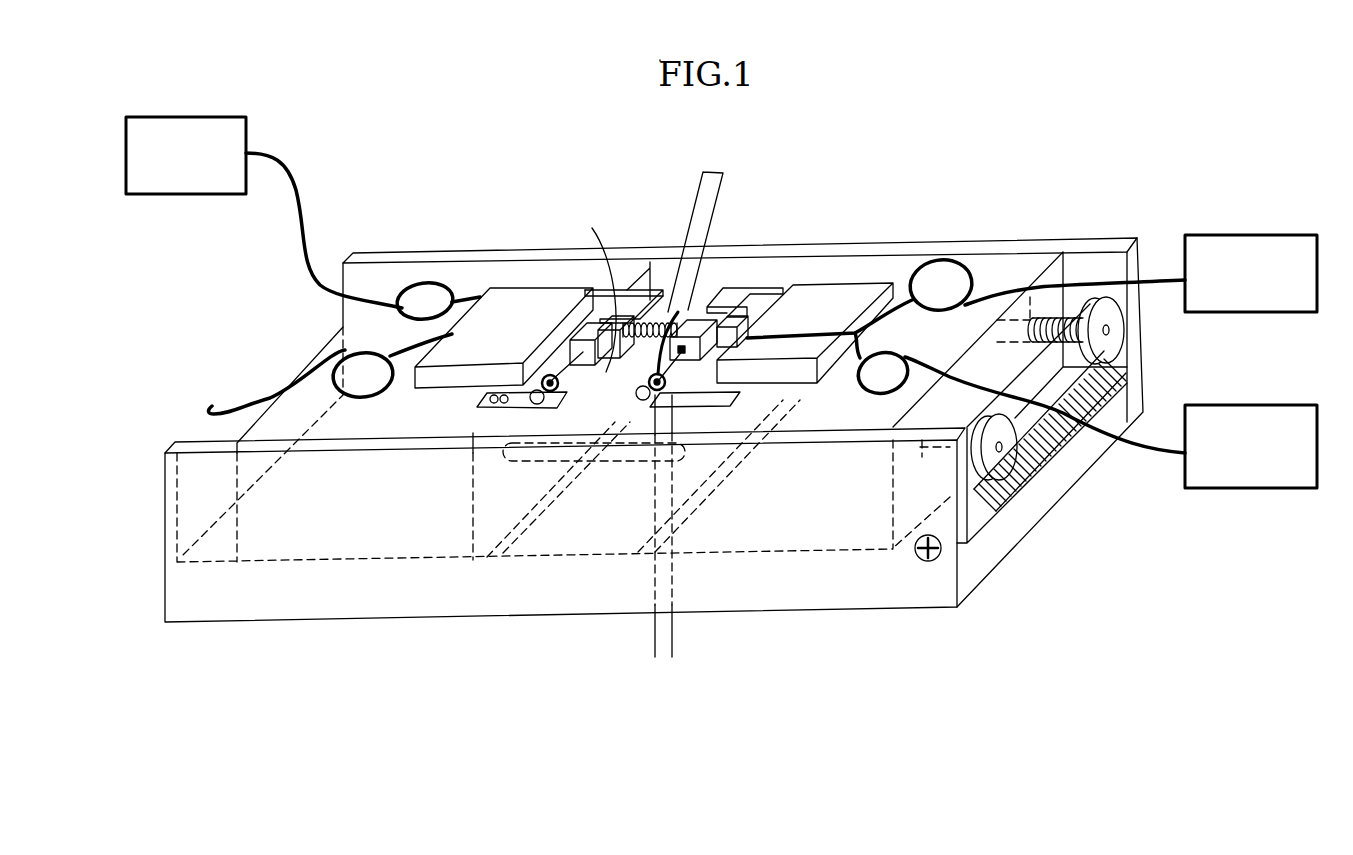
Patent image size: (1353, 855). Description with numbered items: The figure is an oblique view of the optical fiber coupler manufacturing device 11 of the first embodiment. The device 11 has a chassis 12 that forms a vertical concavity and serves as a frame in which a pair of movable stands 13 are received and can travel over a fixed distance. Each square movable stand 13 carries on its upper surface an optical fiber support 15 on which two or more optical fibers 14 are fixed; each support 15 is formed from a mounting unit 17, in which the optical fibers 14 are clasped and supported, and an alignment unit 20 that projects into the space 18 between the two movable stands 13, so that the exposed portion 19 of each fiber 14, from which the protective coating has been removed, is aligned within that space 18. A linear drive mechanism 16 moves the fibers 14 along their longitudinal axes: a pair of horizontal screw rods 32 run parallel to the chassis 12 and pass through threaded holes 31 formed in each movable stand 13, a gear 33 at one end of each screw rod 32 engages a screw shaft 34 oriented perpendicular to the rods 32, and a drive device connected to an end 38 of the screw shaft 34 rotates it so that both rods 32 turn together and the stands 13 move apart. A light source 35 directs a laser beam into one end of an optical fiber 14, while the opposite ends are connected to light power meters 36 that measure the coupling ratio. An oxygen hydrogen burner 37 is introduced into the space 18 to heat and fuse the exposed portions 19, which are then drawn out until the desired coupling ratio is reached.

The optical fiber coupler manufacturing device 11 is at (262, 348).
The chassis 12 is at (187, 600).
The movable stands 13 is at (393, 423).
The optical fibers 14 is at (428, 283).
The optical fiber supports 15 is at (520, 172).
The linear drive mechanism 16 is at (1238, 320).
The mounting unit 17 is at (568, 295).
The space 18 is at (713, 293).
The exposed portion 19 is at (608, 383).
The alignment unit 20 is at (613, 300).
The threaded holes 31 is at (1033, 285).
The screw rods 32 is at (1090, 395).
The gear 33 is at (1110, 340).
The screw shaft 34 is at (1095, 420).
The light source 35 is at (200, 128).
The light power meters 36 is at (1247, 235).
The oxygen hydrogen burner 37 is at (685, 197).
The end of the screw shaft 38 is at (922, 562).